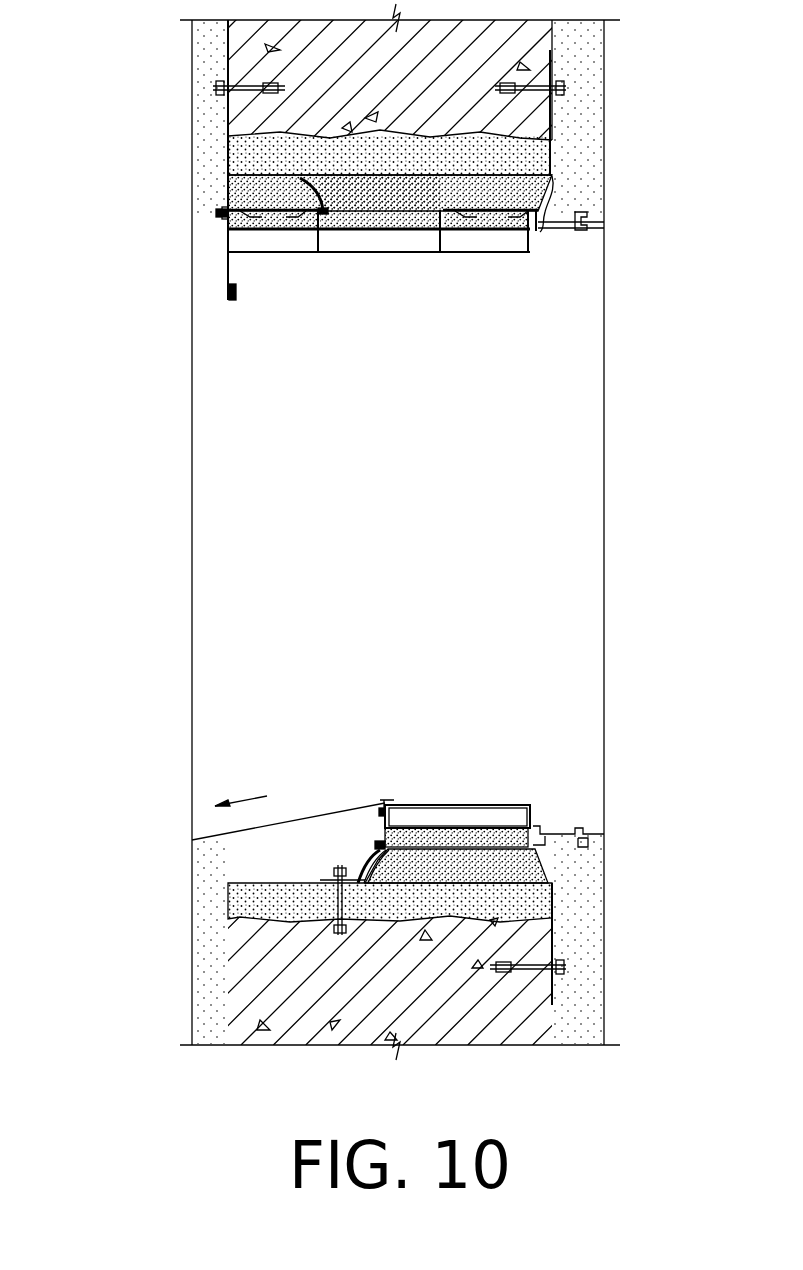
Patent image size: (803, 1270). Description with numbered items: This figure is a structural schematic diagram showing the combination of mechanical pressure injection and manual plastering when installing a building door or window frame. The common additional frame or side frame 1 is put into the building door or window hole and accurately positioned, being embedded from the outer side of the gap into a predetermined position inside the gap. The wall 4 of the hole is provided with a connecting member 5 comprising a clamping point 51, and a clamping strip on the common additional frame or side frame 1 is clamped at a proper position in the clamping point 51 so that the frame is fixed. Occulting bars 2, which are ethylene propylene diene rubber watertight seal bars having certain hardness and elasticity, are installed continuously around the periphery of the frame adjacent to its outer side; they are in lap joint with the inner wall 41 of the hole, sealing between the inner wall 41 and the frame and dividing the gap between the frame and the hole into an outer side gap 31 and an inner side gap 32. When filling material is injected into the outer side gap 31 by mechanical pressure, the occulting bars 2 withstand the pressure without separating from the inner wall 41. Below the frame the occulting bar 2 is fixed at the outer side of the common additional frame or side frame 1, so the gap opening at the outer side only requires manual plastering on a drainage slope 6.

The common additional frame or side frame 1 is at (447, 804).
The occulting bars 2 is at (368, 865).
The wall of the hole 4 is at (258, 166).
The inner wall of the hole 41 is at (487, 175).
The connecting member 5 is at (228, 208).
The clamping point 51 is at (222, 213).
The outer side gap 31 is at (252, 226).
The inner side gap 32 is at (540, 228).
The drainage slope 6 is at (315, 843).